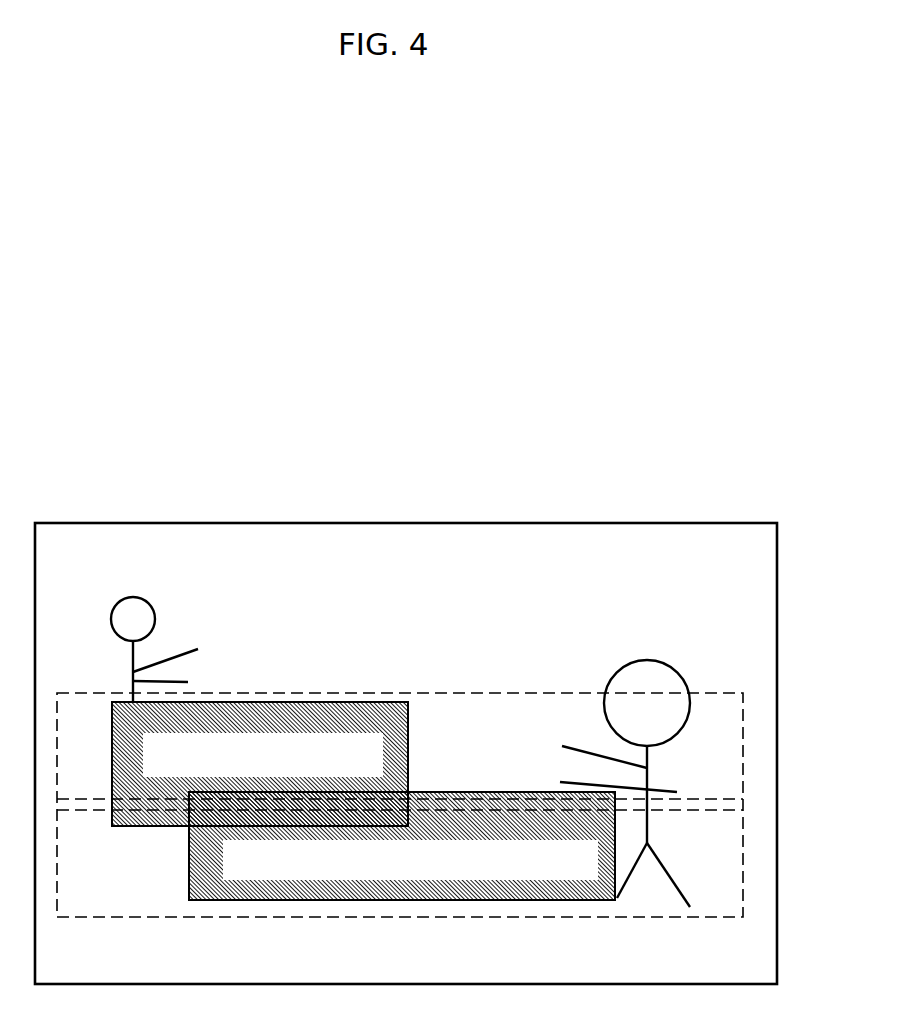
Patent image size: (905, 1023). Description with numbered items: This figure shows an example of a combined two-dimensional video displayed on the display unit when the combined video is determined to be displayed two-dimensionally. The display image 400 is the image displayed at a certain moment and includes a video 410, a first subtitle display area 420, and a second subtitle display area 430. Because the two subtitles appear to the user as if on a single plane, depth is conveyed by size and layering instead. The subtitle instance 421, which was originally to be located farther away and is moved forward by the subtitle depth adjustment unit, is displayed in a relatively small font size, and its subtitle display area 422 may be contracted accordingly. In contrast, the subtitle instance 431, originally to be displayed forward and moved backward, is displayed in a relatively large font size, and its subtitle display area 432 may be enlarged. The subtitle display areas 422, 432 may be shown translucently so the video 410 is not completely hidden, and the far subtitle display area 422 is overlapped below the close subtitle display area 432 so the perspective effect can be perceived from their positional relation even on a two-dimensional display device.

The display image 400 is at (698, 523).
The video 410 is at (518, 622).
The first subtitle display area 420 is at (705, 690).
The subtitle instance 421 is at (250, 723).
The subtitle display area 422 is at (408, 762).
The second subtitle display area 430 is at (713, 917).
The subtitle instance 431 is at (355, 884).
The subtitle display area 432 is at (189, 855).